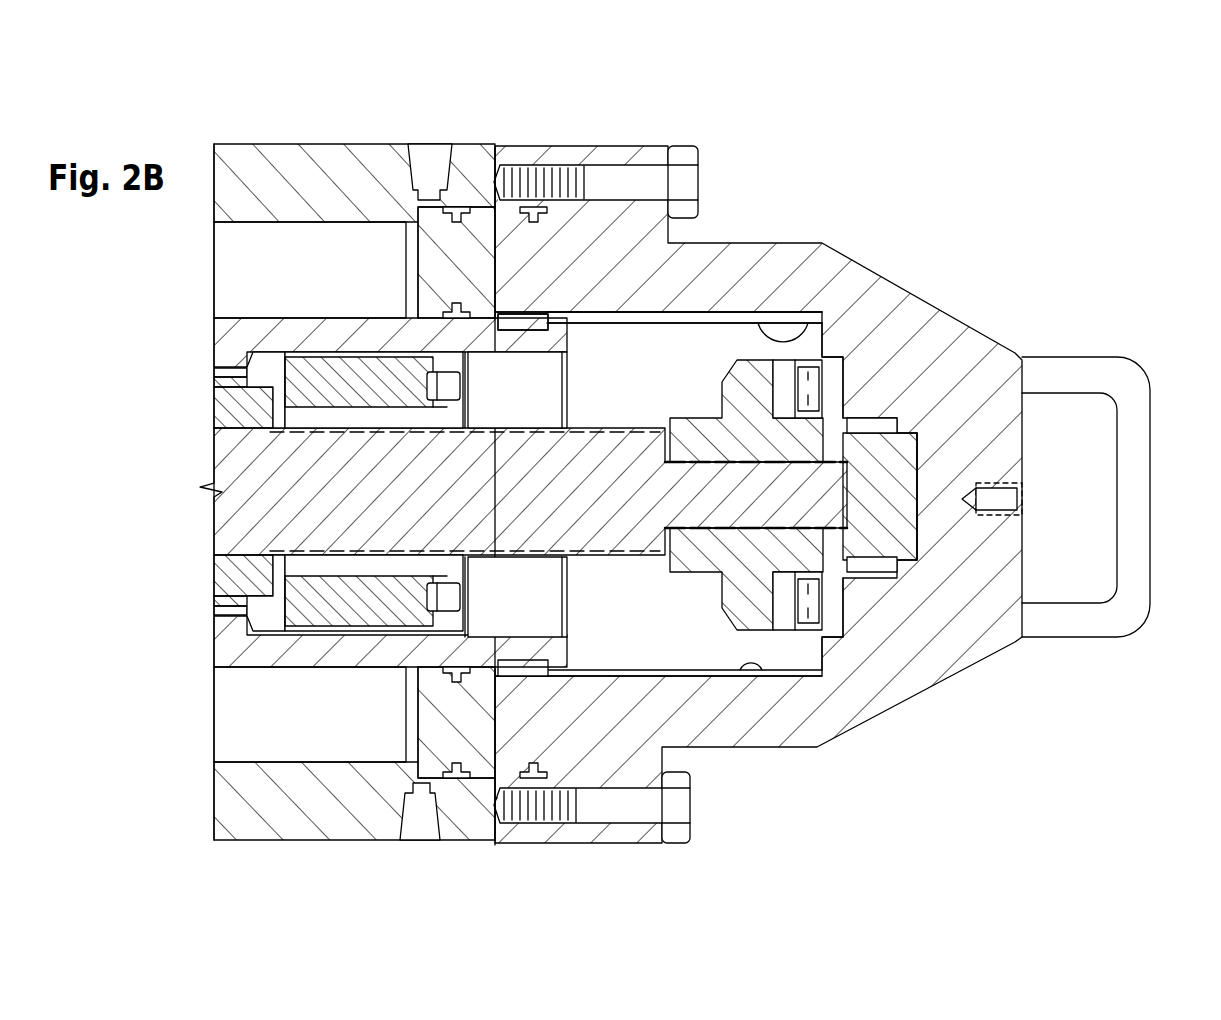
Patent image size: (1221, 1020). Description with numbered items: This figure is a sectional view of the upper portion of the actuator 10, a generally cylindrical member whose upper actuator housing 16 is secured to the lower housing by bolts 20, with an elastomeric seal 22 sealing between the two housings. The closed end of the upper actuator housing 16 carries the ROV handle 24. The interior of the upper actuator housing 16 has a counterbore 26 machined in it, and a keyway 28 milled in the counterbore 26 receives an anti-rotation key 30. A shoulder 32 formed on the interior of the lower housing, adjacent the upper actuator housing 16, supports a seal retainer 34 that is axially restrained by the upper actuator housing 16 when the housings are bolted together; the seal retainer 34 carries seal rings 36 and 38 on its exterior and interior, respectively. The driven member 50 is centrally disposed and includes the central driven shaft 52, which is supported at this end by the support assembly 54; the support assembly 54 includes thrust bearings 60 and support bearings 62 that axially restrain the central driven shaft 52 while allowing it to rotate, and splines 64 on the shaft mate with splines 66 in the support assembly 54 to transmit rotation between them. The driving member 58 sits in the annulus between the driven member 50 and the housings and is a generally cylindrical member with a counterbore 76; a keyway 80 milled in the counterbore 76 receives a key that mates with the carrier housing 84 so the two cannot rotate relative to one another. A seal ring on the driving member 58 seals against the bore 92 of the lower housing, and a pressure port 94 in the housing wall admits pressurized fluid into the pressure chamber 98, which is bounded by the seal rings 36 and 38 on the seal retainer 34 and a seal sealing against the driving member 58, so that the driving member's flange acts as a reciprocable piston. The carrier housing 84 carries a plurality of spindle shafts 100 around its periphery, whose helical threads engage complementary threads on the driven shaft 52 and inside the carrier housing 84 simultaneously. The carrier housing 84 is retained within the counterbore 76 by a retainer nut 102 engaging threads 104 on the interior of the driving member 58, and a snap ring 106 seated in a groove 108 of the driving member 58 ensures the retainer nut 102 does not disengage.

The actuator 10 is at (310, 110).
The upper actuator housing 16 is at (793, 243).
The bolts 20 is at (700, 148).
The elastomeric seal 22 is at (550, 207).
The ROV handle 24 is at (1093, 360).
The counterbore 26 is at (855, 263).
The keyway 28 is at (760, 660).
The anti-rotation key 30 is at (533, 325).
The shoulder 32 is at (423, 193).
The seal retainer 34 is at (470, 745).
The seal ring 36 is at (452, 772).
The seal ring 38 is at (453, 347).
The driven member 50 is at (215, 408).
The central driven shaft 52 is at (215, 518).
The support assembly 54 is at (887, 330).
The driving member 58 is at (217, 330).
The thrust bearings 60 is at (803, 630).
The support bearings 62 is at (880, 580).
The splines 64 is at (710, 560).
The splines 66 is at (690, 440).
The counterbore 76 is at (527, 362).
The keyway 80 is at (230, 373).
The carrier housing 84 is at (215, 605).
The bore 92 is at (235, 745).
The pressure port 94 is at (425, 828).
The pressure chamber 98 is at (337, 724).
The spindle shafts 100 is at (215, 577).
The retainer nut 102 is at (405, 585).
The threads 104 is at (314, 631).
The snap ring 106 is at (467, 598).
The groove 108 is at (470, 620).